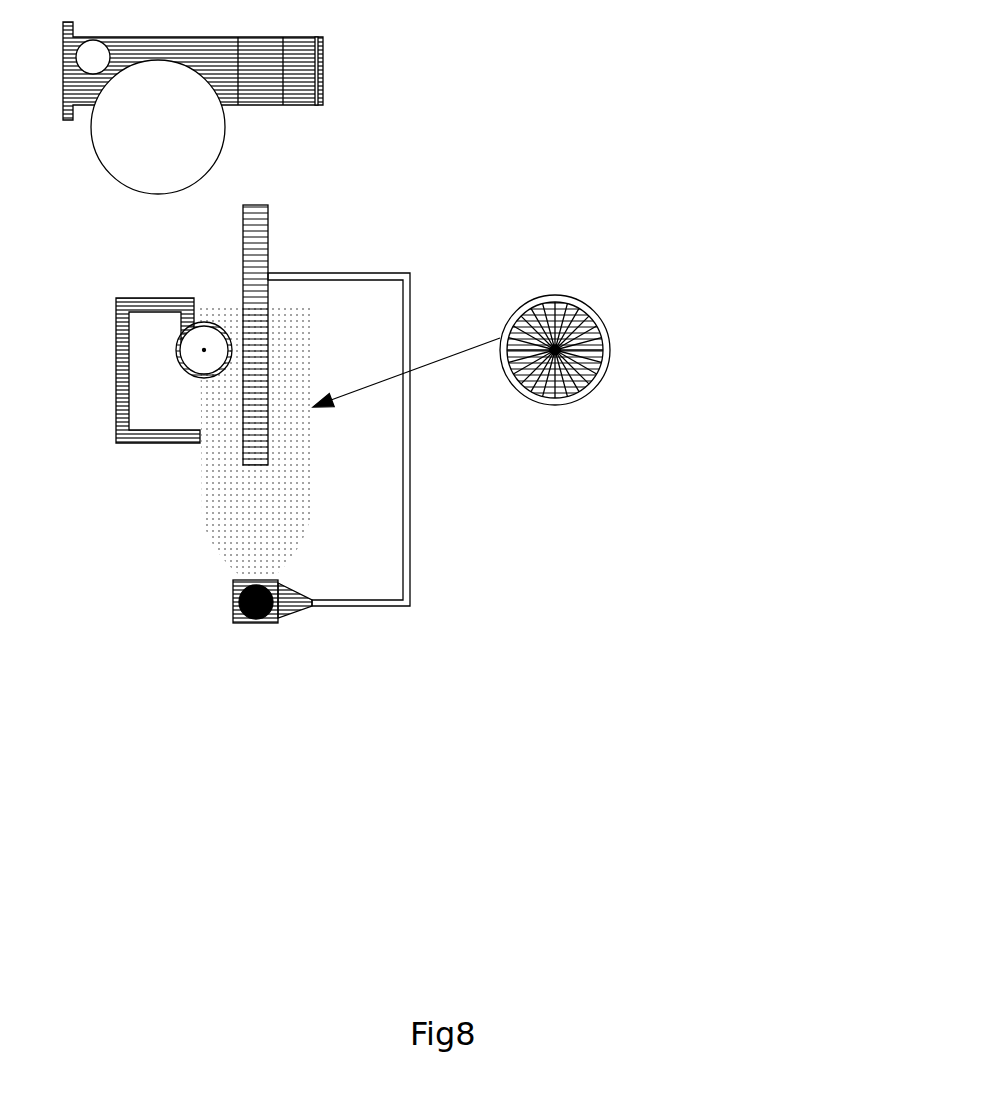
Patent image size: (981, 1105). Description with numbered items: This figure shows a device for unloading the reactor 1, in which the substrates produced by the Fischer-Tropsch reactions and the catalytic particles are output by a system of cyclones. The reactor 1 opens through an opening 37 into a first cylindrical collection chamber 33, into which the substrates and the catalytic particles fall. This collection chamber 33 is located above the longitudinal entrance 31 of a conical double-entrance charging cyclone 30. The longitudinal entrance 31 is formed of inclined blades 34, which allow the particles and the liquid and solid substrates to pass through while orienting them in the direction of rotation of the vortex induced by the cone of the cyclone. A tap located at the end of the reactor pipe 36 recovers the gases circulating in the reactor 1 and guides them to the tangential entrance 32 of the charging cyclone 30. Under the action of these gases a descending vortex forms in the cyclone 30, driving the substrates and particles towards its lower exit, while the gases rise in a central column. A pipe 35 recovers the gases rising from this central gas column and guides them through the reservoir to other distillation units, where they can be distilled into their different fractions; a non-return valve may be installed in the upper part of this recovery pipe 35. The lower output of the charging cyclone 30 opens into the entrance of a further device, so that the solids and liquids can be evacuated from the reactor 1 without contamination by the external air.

The reactor 1 is at (302, 63).
The double-entrance charging cyclone 30 is at (326, 538).
The longitudinal entrance 31 is at (302, 424).
The tangential entrance 32 is at (188, 461).
The first cylindrical collection chamber 33 is at (315, 326).
The inclined blades 34 is at (604, 320).
The pipe 35 is at (279, 234).
The reactor pipe 36 is at (102, 291).
The opening 37 is at (219, 145).